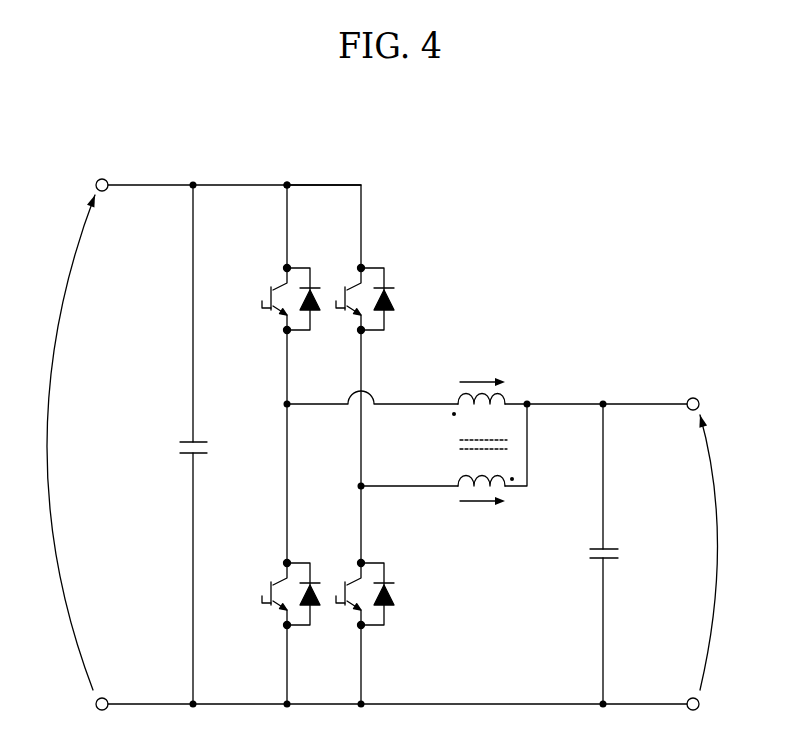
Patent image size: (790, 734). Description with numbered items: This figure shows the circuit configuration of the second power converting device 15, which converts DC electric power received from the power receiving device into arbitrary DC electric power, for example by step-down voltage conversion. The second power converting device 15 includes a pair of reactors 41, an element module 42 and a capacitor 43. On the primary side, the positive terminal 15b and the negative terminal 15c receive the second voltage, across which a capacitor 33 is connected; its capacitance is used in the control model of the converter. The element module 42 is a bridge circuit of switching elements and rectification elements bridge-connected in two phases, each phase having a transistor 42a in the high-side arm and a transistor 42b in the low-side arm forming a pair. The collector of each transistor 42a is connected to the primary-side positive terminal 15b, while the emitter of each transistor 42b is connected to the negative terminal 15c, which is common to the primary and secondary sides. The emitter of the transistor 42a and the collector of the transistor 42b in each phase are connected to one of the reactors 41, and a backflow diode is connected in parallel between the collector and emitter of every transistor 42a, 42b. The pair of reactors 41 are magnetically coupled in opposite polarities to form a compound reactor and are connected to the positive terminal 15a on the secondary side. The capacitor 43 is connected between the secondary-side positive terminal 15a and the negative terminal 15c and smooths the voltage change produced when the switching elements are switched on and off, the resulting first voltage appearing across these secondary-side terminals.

The second power converting device 15 is at (640, 213).
The positive terminal on the secondary side 15a is at (603, 404).
The positive terminal on the primary side 15b is at (287, 185).
The negative terminal 15c is at (603, 704).
The capacitor 33 is at (190, 442).
The pair of reactors 41 is at (500, 480).
The element module 42 is at (330, 185).
The transistor in the high-side arm 42a is at (287, 268).
The transistor in the low-side arm 42b is at (287, 624).
The capacitor 43 is at (607, 549).